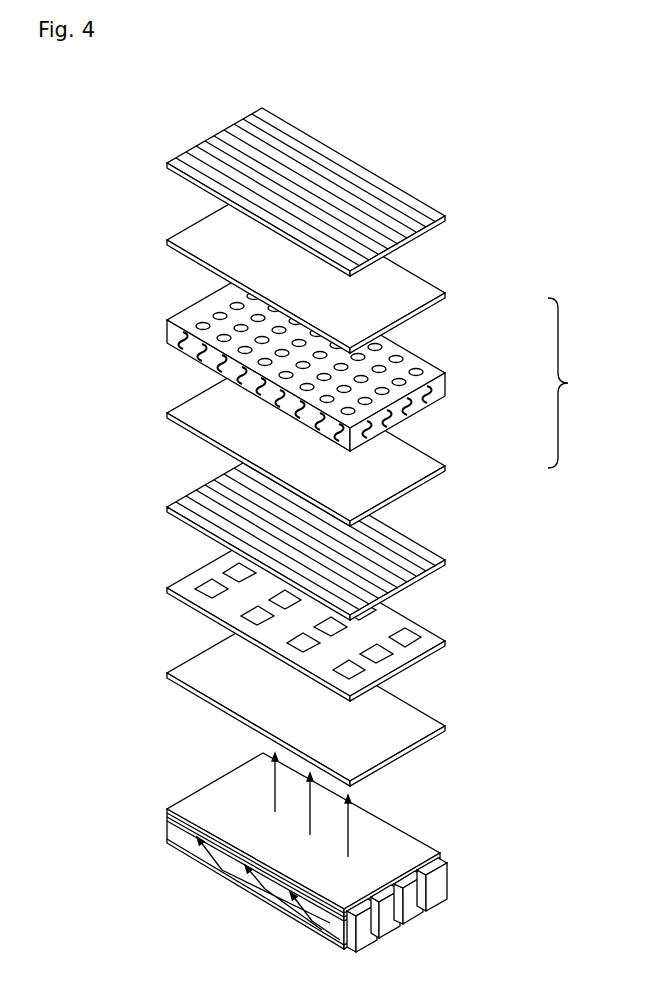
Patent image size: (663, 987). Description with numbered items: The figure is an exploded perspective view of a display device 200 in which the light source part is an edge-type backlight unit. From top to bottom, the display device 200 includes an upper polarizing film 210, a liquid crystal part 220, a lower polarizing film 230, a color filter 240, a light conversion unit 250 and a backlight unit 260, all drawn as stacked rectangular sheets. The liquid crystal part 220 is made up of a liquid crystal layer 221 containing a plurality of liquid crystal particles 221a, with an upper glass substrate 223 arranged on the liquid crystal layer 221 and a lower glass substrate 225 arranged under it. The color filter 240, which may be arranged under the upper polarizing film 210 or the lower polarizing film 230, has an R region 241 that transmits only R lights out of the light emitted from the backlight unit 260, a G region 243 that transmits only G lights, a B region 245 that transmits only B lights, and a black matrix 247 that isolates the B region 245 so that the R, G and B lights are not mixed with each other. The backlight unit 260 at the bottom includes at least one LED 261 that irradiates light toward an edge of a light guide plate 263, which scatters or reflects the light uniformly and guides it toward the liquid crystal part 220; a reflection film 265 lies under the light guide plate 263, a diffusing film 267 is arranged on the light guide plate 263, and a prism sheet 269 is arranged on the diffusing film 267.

The display device 200 is at (466, 140).
The upper polarizing film 210 is at (445, 216).
The liquid crystal part 220 is at (572, 383).
The liquid crystal layer 221 is at (316, 358).
The liquid crystal particles 221a is at (172, 332).
The upper glass substrate 223 is at (445, 293).
The lower glass substrate 225 is at (445, 468).
The lower polarizing film 230 is at (445, 558).
The color filter 240 is at (320, 612).
The R region 241 is at (168, 589).
The G region 243 is at (243, 613).
The B region 245 is at (390, 610).
The black matrix 247 is at (215, 570).
The light conversion unit 250 is at (445, 724).
The backlight unit 260 is at (319, 860).
The LED 261 is at (413, 907).
The light guide plate 263 is at (168, 832).
The reflection film 265 is at (267, 906).
The diffusing film 267 is at (168, 814).
The prism sheet 269 is at (190, 822).